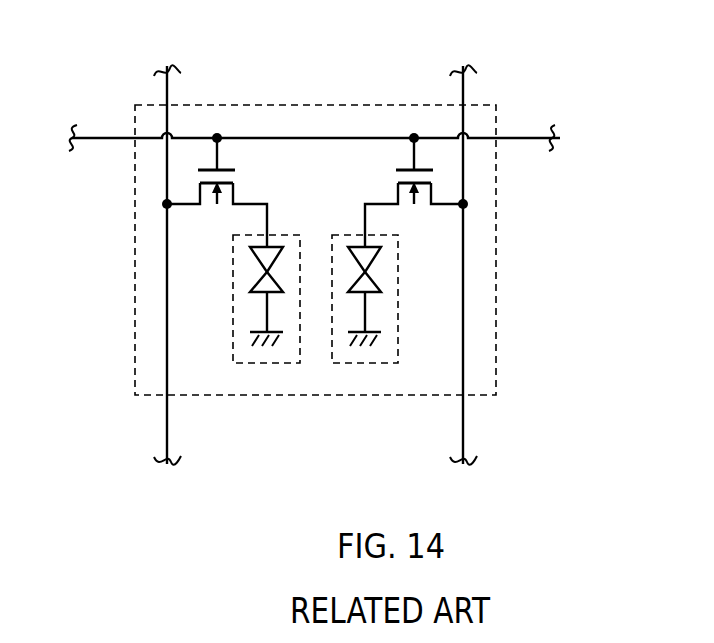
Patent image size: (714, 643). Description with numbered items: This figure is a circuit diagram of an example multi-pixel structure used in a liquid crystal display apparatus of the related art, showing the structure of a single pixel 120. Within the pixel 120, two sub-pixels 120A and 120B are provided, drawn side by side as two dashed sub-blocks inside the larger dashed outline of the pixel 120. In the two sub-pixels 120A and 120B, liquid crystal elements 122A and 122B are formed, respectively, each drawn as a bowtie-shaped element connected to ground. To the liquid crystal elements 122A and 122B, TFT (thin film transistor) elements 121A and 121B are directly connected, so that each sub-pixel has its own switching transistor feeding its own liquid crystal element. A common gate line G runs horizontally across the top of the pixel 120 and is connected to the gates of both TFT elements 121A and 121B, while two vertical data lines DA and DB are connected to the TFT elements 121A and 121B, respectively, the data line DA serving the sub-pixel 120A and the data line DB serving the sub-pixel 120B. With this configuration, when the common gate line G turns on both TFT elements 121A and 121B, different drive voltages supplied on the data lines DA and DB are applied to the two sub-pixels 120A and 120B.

The gate line G is at (551, 135).
The data line DA is at (167, 96).
The data line DB is at (463, 96).
The pixel 120 is at (261, 105).
The sub-pixel 120A is at (233, 289).
The sub-pixel 120B is at (398, 289).
The TFT element 121A is at (185, 183).
The TFT element 121B is at (446, 182).
The liquid crystal element 122A is at (287, 313).
The liquid crystal element 122B is at (385, 313).